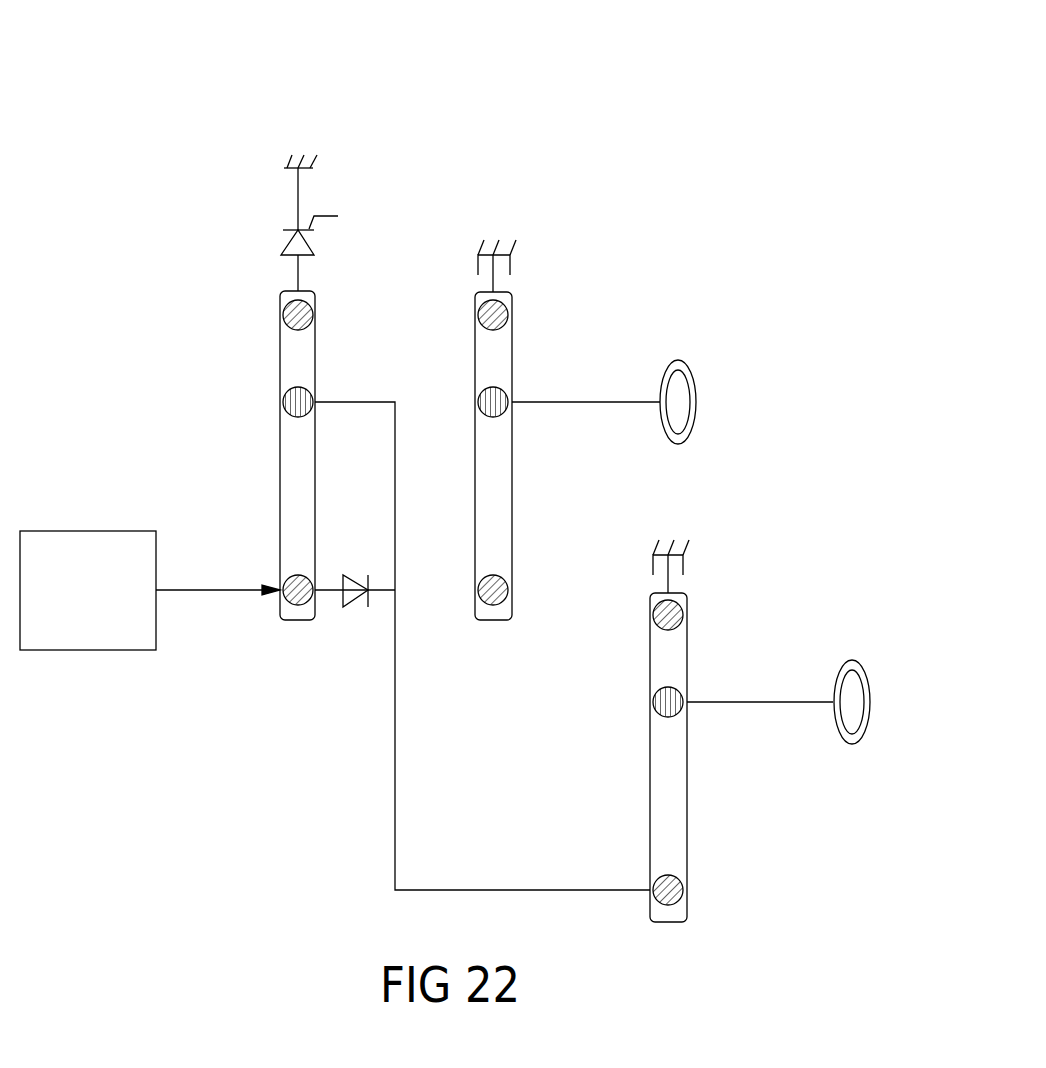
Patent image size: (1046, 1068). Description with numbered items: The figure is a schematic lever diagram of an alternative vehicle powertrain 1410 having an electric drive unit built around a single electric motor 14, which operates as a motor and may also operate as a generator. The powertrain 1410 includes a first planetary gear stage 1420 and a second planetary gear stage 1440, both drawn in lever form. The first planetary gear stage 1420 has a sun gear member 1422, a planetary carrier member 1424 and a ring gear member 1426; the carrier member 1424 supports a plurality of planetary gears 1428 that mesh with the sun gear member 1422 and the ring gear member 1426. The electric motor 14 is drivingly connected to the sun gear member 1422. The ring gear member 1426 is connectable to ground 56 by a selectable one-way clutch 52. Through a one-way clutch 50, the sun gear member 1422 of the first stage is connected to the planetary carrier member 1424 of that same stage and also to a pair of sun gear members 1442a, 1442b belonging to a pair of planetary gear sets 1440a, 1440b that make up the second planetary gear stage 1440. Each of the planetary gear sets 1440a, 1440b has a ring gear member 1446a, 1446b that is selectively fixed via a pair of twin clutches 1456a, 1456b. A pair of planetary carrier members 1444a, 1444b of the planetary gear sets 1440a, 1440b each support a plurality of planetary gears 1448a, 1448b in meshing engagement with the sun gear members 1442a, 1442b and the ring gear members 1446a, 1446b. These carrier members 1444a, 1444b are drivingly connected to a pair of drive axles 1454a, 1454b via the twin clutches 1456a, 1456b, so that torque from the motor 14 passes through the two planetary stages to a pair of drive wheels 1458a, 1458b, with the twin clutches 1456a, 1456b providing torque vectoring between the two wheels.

The electric motor 14 is at (102, 602).
The one-way clutch 50 is at (358, 606).
The selectable one-way clutch 52 is at (290, 235).
The ground 56 is at (298, 166).
The powertrain 1410 is at (652, 88).
The first planetary gear stage 1420 is at (258, 140).
The sun gear member 1422 is at (294, 604).
The planetary carrier member 1424 is at (355, 400).
The ring gear member 1426 is at (290, 306).
The planetary gears 1428 is at (290, 414).
The second planetary gear stage 1440 is at (519, 233).
The planetary gear set 1440a is at (460, 232).
The planetary gear set 1440b is at (692, 535).
The sun gear member 1442a is at (506, 603).
The sun gear member 1442b is at (681, 903).
The planetary carrier member 1444a is at (534, 400).
The planetary carrier member 1444b is at (708, 700).
The ring gear member 1446a is at (506, 308).
The ring gear member 1446b is at (681, 608).
The planetary gears 1448a is at (504, 414).
The planetary gears 1448b is at (679, 714).
The drive axle 1454a is at (600, 403).
The drive axle 1454b is at (774, 703).
The twin clutch 1456a is at (476, 264).
The twin clutch 1456b is at (652, 566).
The drive wheel 1458a is at (668, 364).
The drive wheel 1458b is at (842, 664).